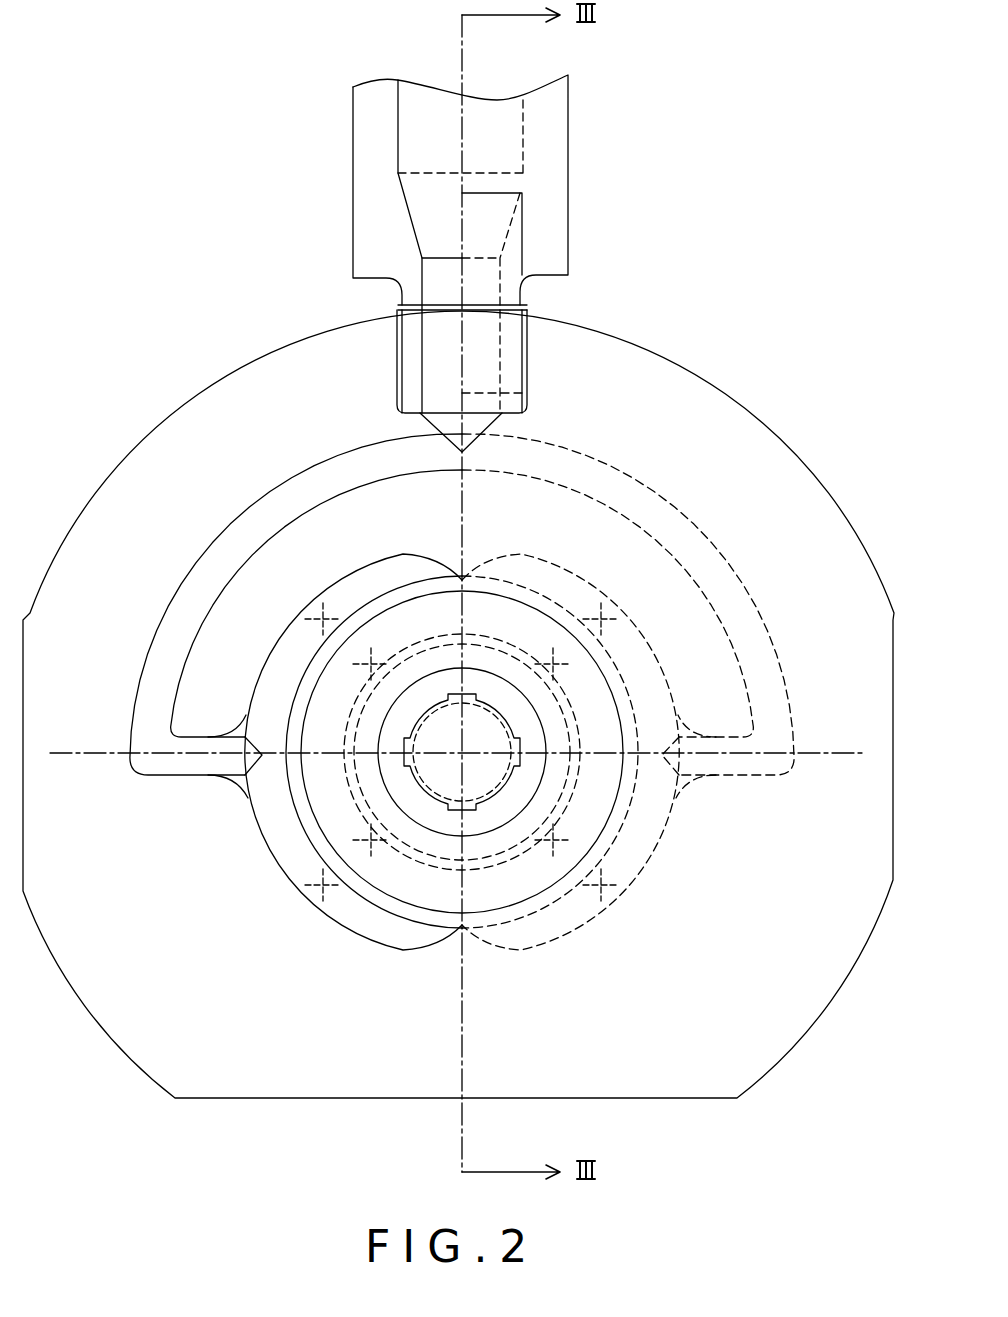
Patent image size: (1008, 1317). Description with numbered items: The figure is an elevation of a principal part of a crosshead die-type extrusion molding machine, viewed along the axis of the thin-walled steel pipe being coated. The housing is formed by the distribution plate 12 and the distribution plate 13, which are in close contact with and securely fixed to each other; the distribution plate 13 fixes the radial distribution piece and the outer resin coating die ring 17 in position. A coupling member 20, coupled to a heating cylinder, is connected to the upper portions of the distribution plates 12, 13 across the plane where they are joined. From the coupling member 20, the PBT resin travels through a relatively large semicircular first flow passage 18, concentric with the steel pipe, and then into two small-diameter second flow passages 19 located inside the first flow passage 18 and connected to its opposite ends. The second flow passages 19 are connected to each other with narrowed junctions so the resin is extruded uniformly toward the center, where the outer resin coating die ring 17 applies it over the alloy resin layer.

The distribution plate 12 is at (458, 664).
The distribution plate 13 is at (672, 378).
The outer resin coating die ring 17 is at (395, 872).
The first flow passage 18 is at (240, 530).
The second flow passages 19 is at (285, 845).
The coupling member 20 is at (373, 165).